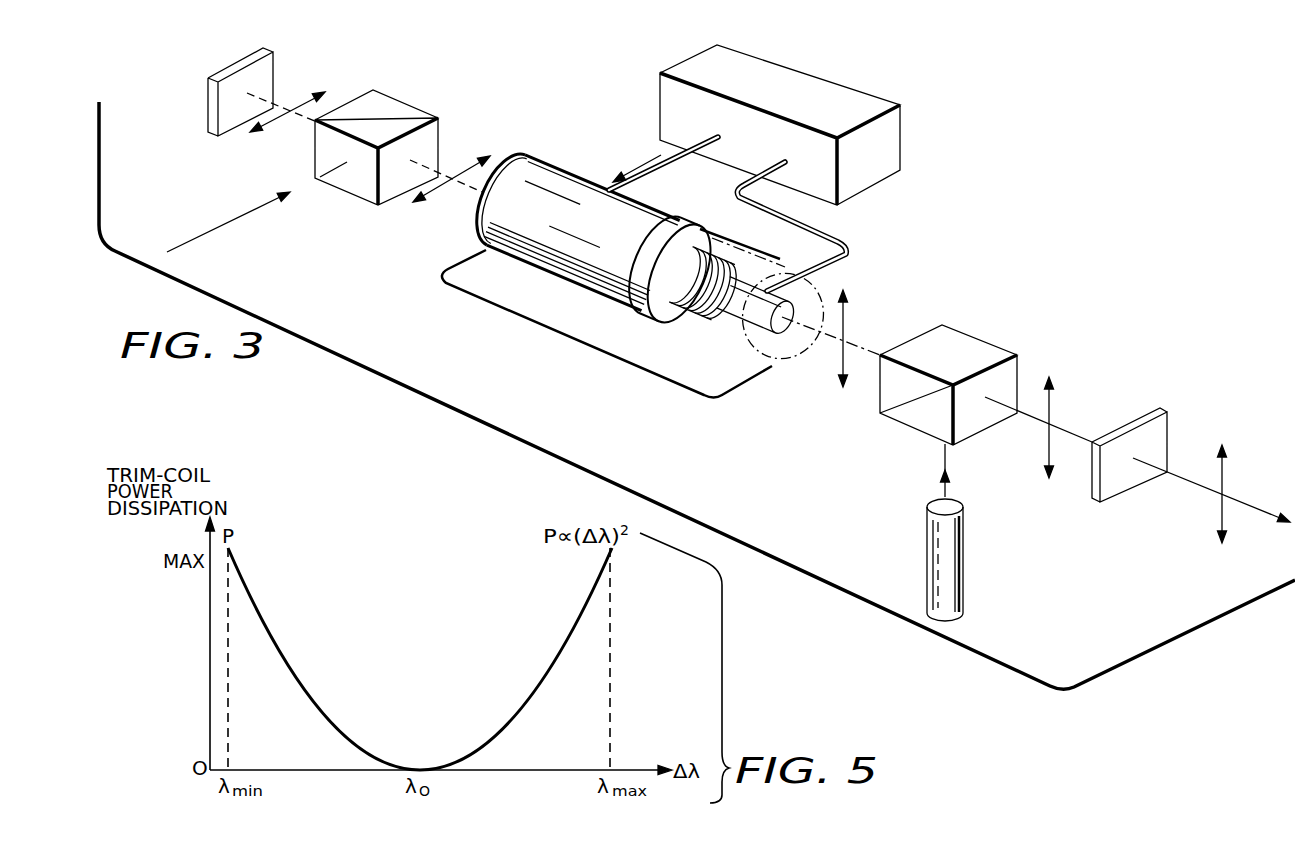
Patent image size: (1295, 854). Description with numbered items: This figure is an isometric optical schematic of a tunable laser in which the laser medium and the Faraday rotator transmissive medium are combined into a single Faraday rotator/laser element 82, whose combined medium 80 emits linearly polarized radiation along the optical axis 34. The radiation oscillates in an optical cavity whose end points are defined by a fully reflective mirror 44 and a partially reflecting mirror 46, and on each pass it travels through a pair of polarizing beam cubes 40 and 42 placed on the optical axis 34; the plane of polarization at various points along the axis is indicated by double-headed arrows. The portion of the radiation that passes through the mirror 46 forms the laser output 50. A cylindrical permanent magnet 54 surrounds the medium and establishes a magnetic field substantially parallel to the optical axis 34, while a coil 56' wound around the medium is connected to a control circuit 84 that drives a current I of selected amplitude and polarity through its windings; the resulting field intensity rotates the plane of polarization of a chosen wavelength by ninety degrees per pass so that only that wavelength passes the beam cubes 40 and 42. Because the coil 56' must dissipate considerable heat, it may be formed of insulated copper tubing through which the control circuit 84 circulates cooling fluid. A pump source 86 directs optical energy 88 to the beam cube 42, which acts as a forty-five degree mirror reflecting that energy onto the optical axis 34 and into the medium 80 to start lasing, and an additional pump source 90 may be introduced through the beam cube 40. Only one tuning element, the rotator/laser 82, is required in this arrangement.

The mirror 44 is at (267, 75).
The additional pump source 90 is at (220, 226).
The polarizing beam cube 40 is at (357, 183).
The optical axis 34 is at (465, 187).
The permanent magnet 54 is at (540, 258).
The Faraday rotator/laser element 82 is at (550, 333).
The coil 56' is at (695, 304).
The combined medium 80 is at (732, 336).
The control circuit 84 is at (878, 105).
The polarizing beam cube 42 is at (995, 355).
The optical energy 88 is at (945, 488).
The pump source 86 is at (967, 533).
The mirror 46 is at (1163, 448).
The laser output 50 is at (1263, 483).